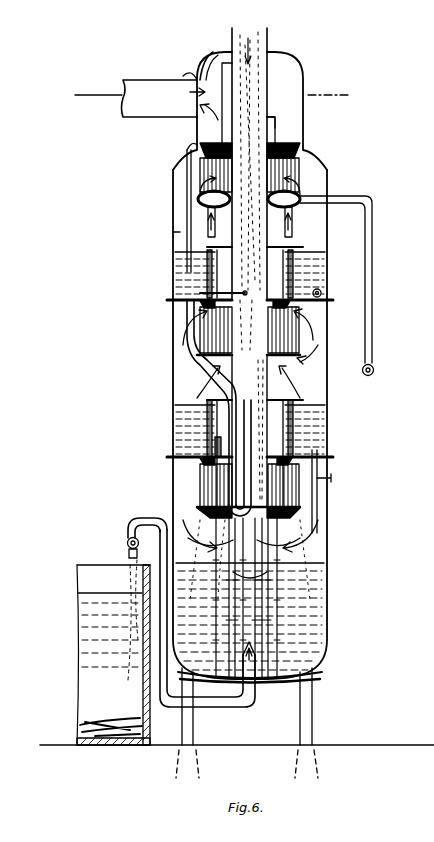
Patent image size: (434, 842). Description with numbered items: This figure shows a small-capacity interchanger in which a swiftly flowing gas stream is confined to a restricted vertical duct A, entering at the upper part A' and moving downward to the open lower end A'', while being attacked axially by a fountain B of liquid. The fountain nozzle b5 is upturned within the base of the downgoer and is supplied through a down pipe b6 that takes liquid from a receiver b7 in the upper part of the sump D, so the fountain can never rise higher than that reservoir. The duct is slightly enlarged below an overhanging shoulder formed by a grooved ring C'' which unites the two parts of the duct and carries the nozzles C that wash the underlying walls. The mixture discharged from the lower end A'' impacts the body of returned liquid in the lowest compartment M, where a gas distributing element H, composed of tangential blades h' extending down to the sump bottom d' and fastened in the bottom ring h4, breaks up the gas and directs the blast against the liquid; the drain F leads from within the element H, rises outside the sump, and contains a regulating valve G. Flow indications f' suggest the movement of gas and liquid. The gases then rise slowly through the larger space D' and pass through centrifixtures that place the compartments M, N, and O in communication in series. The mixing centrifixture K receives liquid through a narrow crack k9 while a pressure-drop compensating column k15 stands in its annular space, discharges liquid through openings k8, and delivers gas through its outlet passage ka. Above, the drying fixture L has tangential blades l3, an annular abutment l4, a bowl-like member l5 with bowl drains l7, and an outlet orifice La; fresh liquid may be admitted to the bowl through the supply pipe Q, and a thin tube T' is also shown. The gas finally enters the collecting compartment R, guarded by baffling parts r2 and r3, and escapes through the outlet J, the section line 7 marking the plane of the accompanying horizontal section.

The gas outlet J is at (148, 82).
The section line 7— 7 is at (207, 95).
The baffling part r2 is at (214, 56).
The baffling part r3 is at (197, 78).
The collecting compartment R is at (268, 100).
The upper part of duct A' is at (248, 107).
The outlet orifice of fixture L La is at (278, 138).
The tangential blades l3 is at (205, 166).
The thin tube T' is at (171, 211).
The drying centrifixture L is at (300, 170).
The annular abutment l4 is at (288, 172).
The bowl-like member l5 is at (200, 208).
The supply pipe Q is at (337, 279).
The bowl drain l7 is at (292, 242).
The upper compartment O is at (180, 229).
The grooved ring C'' is at (283, 256).
The nozzle C is at (265, 274).
The outlet passage ka is at (206, 270).
The receiver b7 is at (200, 288).
The pressure-drop compensating column k15 is at (322, 295).
The mixing centrifixture K is at (283, 320).
The crack k9 is at (206, 310).
The fountain B is at (183, 603).
The intermediate compartment N is at (182, 368).
The down pipe b6 is at (202, 378).
The fountain nozzle b5 is at (249, 403).
The duct A is at (271, 382).
The peripheral liquid discharge opening k8 is at (306, 358).
The space D' is at (282, 405).
The sump D is at (264, 455).
The lower end of duct A'' is at (266, 487).
The gas distributing element H is at (250, 562).
The tangential blades h' is at (282, 598).
The flow lines f' is at (270, 580).
The sump bottom d' is at (265, 675).
The bottom ring h4 is at (262, 678).
The drain F is at (191, 623).
The regulating valve G is at (126, 542).
The lower compartment M is at (190, 487).